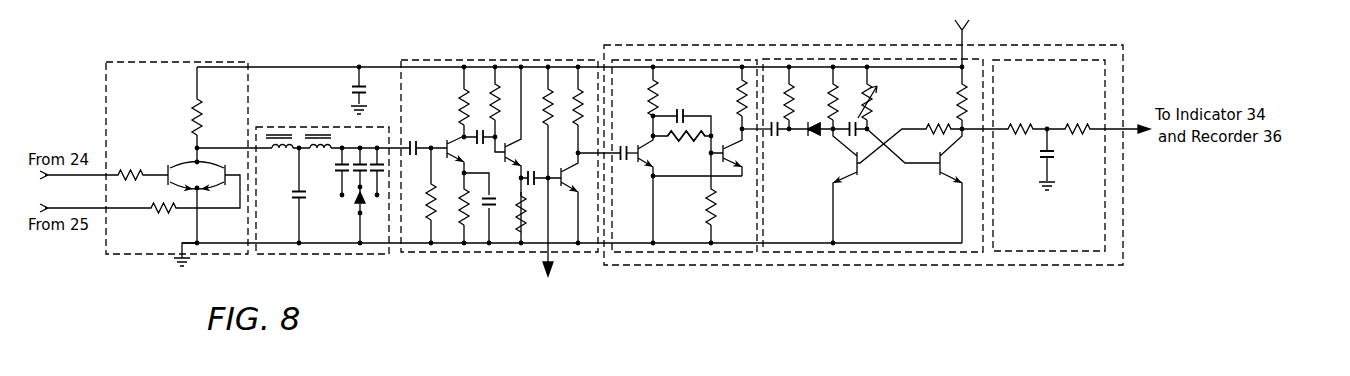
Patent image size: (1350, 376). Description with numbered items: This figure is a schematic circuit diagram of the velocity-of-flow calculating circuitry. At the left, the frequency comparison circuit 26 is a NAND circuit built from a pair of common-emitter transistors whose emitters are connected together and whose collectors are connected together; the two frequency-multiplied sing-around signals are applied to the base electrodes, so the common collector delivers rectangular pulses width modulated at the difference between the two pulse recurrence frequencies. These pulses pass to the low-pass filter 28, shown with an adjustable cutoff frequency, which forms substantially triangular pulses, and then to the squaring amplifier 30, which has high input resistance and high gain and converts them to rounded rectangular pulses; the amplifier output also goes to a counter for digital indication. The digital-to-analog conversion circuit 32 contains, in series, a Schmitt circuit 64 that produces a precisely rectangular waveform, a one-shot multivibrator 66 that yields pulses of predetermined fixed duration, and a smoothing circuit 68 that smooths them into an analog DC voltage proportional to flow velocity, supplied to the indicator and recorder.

The frequency comparison circuit 26 is at (192, 60).
The low-pass filter 28 is at (316, 254).
The squaring amplifier 30 is at (508, 57).
The digital-to-analog conversion circuit 32 is at (724, 44).
The Schmitt circuit 64 is at (681, 255).
The one-shot multivibrator 66 is at (838, 252).
The smoothing circuit 68 is at (1043, 252).